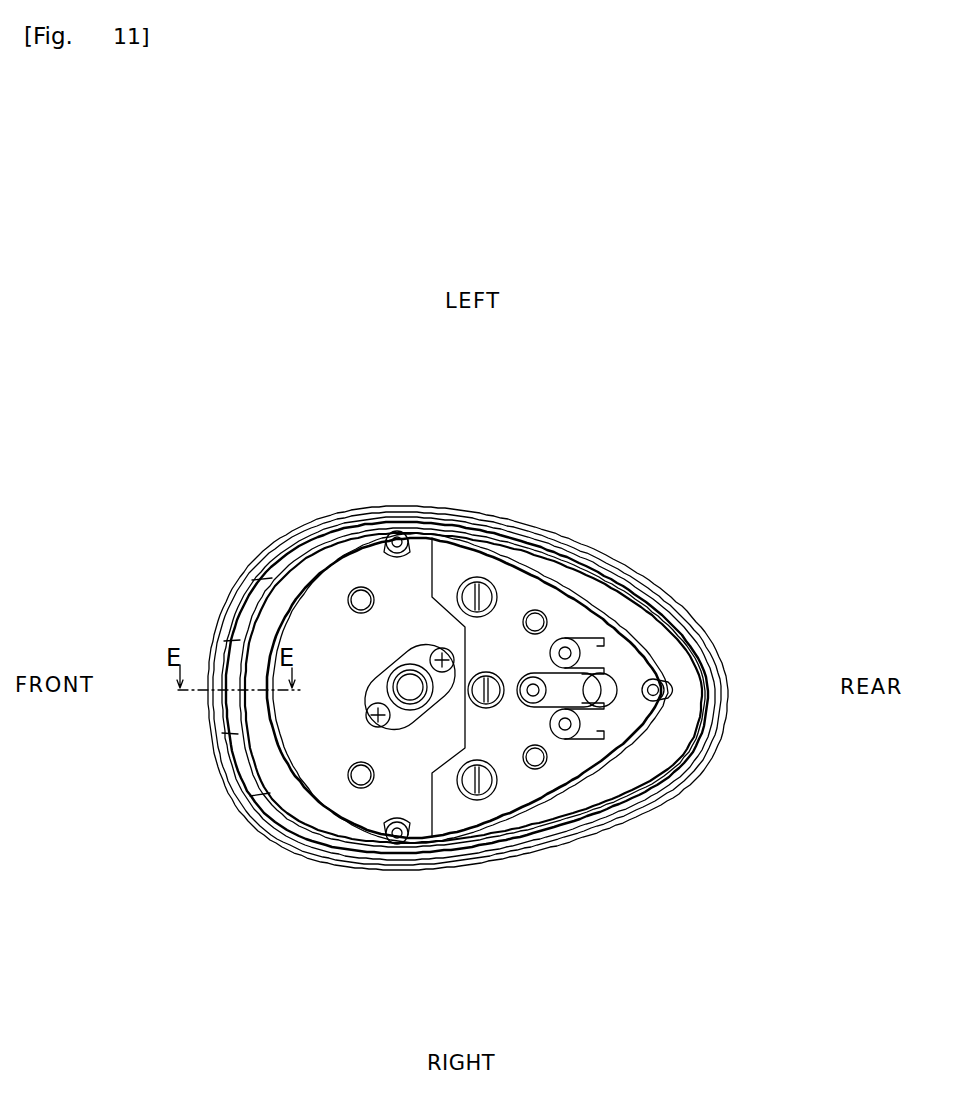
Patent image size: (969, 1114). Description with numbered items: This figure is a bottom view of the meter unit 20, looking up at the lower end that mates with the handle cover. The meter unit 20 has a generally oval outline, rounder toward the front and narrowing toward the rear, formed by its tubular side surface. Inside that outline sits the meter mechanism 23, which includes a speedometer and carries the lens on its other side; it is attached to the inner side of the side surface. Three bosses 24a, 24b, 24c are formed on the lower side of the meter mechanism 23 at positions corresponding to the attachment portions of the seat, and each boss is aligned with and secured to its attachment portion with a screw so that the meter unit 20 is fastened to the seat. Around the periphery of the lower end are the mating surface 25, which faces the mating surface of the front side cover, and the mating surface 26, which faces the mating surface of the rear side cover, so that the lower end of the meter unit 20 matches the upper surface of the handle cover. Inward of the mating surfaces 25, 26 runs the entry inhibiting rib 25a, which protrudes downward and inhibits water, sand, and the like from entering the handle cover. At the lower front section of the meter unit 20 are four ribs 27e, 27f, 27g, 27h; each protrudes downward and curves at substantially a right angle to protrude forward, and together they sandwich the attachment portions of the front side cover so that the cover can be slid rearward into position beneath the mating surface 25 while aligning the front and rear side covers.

The meter unit 20 is at (506, 494).
The meter mechanism 23 is at (578, 623).
The boss 24a is at (410, 848).
The boss 24b is at (655, 683).
The boss 24c is at (412, 530).
The mating surface 25 is at (342, 519).
The entry inhibiting rib 25a is at (670, 606).
The mating surface 26 is at (549, 530).
The rib 27e is at (262, 578).
The rib 27f is at (230, 640).
The rib 27g is at (230, 733).
The rib 27h is at (256, 797).